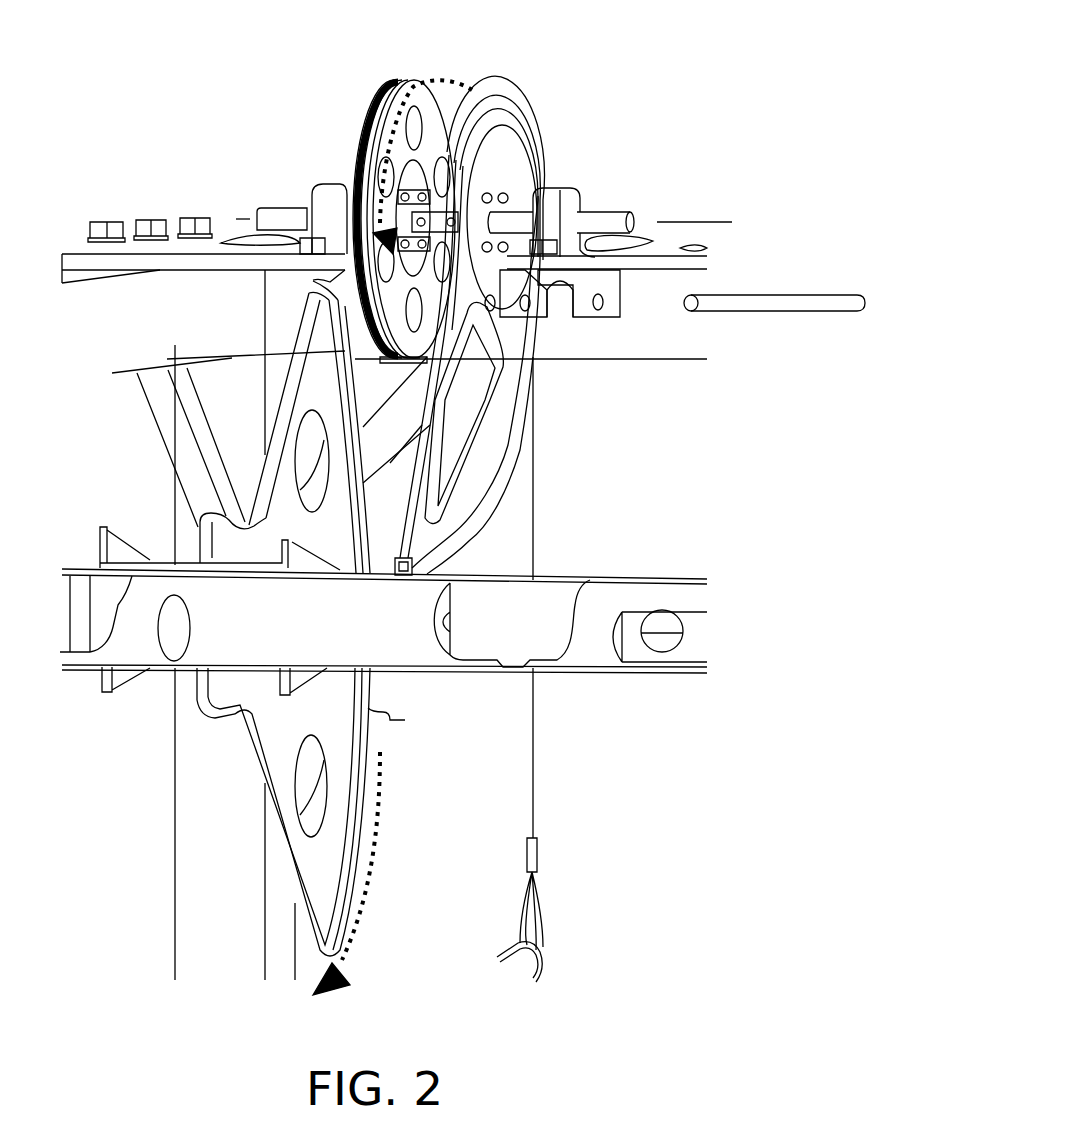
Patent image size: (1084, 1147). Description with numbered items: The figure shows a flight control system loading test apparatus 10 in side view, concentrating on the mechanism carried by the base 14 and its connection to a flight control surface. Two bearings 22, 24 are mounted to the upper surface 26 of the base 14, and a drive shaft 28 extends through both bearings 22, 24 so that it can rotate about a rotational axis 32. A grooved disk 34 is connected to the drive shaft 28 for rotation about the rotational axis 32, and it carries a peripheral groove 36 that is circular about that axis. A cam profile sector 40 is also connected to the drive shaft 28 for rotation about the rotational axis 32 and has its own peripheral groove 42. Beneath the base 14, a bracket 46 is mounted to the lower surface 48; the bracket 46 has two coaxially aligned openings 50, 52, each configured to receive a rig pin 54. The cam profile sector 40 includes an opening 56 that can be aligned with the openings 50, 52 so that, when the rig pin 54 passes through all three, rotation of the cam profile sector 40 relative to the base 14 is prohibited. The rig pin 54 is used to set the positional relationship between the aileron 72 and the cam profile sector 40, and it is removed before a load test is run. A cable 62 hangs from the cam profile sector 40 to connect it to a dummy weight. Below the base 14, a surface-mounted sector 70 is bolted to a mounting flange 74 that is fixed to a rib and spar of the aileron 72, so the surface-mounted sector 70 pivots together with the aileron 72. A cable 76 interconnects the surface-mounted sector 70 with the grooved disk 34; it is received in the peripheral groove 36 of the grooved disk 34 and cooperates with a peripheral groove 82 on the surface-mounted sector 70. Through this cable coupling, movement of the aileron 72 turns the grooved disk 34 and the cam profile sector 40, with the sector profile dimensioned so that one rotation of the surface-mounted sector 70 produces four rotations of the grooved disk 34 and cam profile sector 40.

The flight control system loading test apparatus 10 is at (688, 61).
The base 14 is at (75, 252).
The bearing 22 is at (326, 188).
The bearing 24 is at (562, 190).
The upper surface 26 is at (193, 238).
The drive shaft 28 is at (278, 212).
The rotational axis 32 is at (718, 222).
The grooved disk 34 is at (373, 100).
The peripheral groove 36 is at (398, 80).
The cam profile sector 40 is at (530, 132).
The peripheral groove 42 is at (492, 103).
The bracket 46 is at (583, 312).
The lower surface 48 is at (92, 282).
The opening 50 is at (526, 303).
The opening 52 is at (603, 303).
The rig pin 54 is at (800, 298).
The opening 56 is at (533, 360).
The cable 62 is at (533, 522).
The surface-mounted sector 70 is at (290, 440).
The aileron 72 is at (65, 568).
The mounting flange 74 is at (108, 527).
The cable 76 is at (346, 347).
The peripheral groove 82 is at (380, 713).